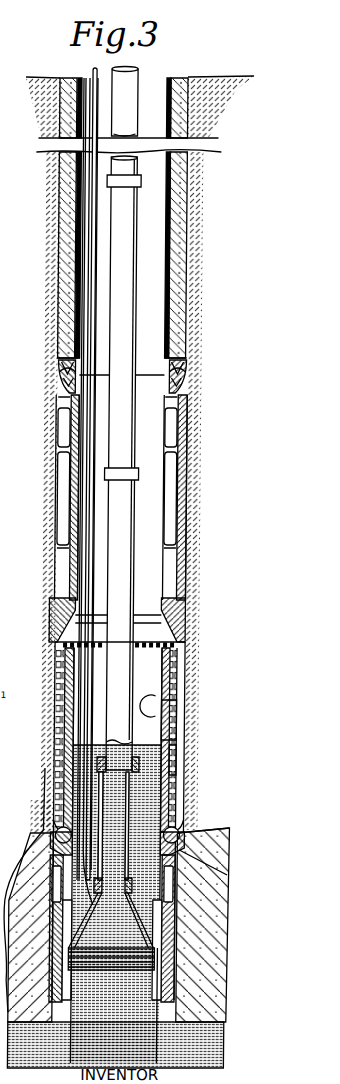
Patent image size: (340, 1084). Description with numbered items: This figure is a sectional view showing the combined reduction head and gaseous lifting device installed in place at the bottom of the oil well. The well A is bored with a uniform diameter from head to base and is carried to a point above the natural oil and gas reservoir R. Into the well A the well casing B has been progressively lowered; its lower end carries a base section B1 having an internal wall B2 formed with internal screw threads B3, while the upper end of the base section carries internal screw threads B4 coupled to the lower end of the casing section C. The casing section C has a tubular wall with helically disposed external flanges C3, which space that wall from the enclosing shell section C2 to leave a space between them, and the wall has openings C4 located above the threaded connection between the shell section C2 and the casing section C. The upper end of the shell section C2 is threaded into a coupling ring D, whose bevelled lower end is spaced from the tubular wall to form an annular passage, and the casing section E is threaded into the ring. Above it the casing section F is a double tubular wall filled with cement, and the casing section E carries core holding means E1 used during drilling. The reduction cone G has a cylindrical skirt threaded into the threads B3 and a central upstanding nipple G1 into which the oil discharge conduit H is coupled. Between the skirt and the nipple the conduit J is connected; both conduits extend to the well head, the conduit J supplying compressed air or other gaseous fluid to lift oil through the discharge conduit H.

The casing section F is at (170, 333).
The core holding means E1 is at (129, 375).
The well A is at (154, 497).
The casing section E is at (139, 497).
The conduit J is at (171, 486).
The coupling ring D is at (152, 620).
The oil discharge conduit H is at (192, 419).
The well casing B is at (152, 821).
The casing section C is at (163, 740).
The shell section C2 is at (229, 757).
The flanges C3 is at (215, 720).
The openings C4 is at (163, 811).
The base section B1 is at (157, 927).
The internal wall B2 is at (164, 961).
The internal screw threads B3 is at (134, 880).
The internal screw threads B4 is at (152, 829).
The reduction cone G is at (135, 925).
The upstanding nipple G1 is at (230, 850).
The natural oil and gas reservoir R is at (218, 1040).